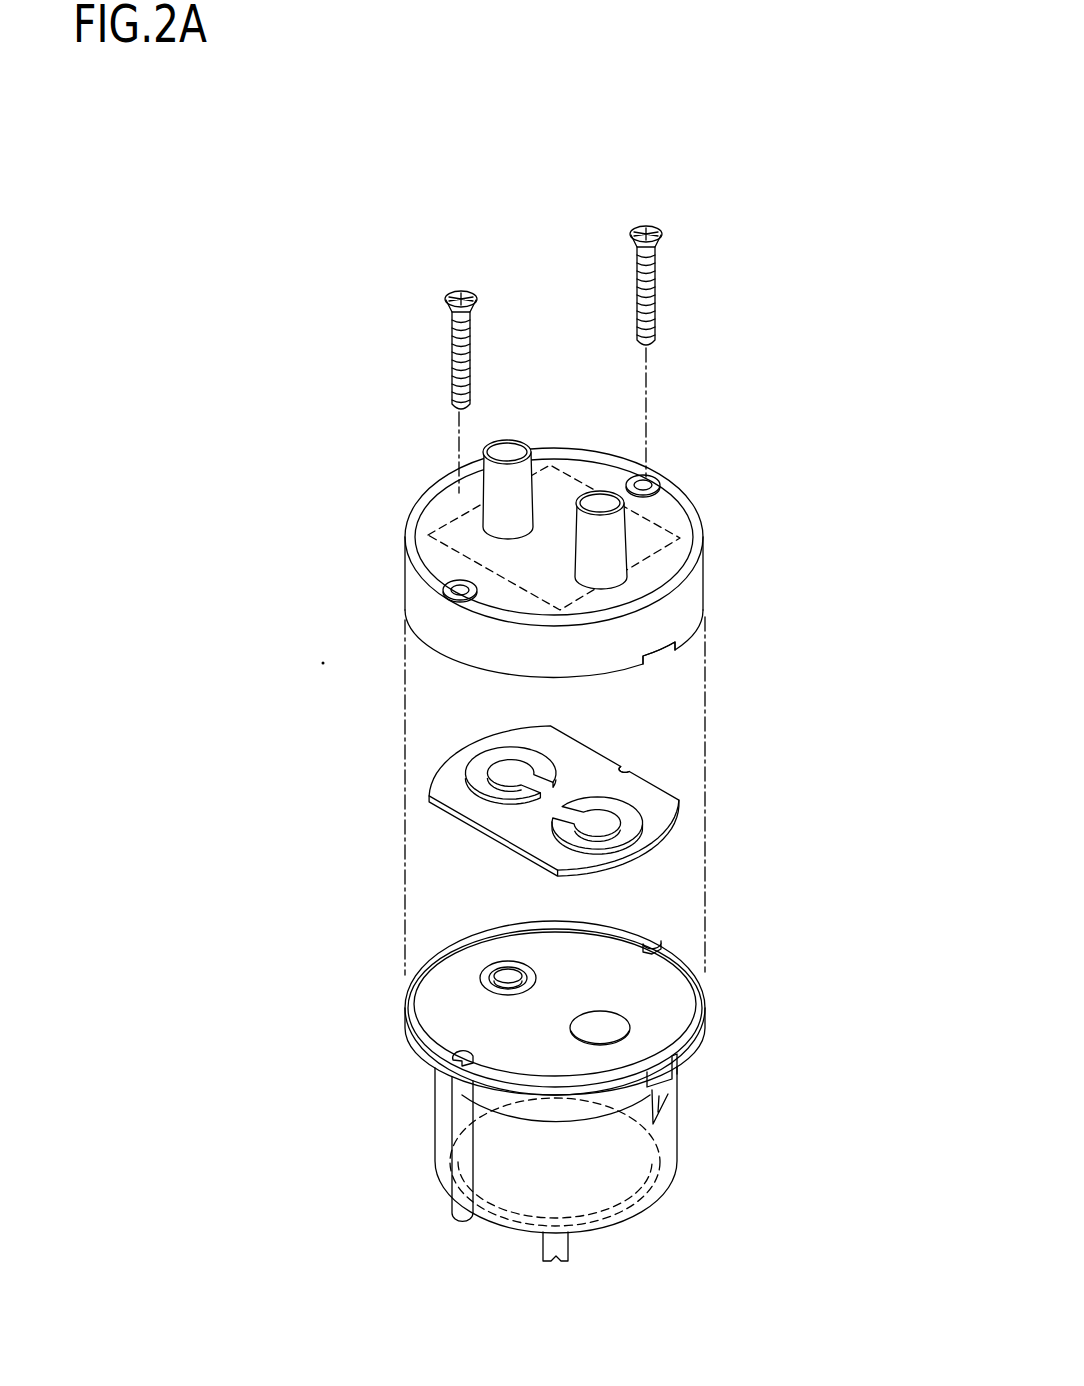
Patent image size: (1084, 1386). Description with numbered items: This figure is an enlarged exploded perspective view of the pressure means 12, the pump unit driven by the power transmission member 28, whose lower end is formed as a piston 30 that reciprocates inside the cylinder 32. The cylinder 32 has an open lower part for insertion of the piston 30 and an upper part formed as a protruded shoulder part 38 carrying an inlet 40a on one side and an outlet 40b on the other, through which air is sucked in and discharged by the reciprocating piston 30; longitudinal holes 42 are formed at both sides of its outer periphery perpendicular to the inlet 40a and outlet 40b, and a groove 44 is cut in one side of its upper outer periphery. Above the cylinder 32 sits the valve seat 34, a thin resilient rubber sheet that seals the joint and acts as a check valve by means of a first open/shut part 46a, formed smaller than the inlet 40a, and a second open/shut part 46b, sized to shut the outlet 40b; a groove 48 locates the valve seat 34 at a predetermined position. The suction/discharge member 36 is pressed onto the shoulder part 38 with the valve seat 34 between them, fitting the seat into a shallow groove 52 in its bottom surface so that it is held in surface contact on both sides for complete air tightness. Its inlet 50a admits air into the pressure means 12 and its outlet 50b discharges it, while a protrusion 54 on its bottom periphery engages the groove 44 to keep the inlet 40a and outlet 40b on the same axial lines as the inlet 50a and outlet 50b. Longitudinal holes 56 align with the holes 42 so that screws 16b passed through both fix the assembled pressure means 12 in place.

The pressure means 12 is at (398, 488).
The screw 16b is at (455, 290).
The power transmission member 28 is at (548, 1252).
The piston 30 is at (640, 1205).
The cylinder 32 is at (702, 1046).
The valve seat 34 is at (447, 803).
The suction/discharge member 36 is at (705, 530).
The shoulder part 38 is at (452, 1052).
The inlet 40a is at (605, 1016).
The outlet 40b is at (505, 974).
The longitudinal holes 42 is at (452, 1060).
The groove 44 is at (674, 1072).
The first open/shut part 46a is at (605, 822).
The second open/shut part 46b is at (507, 768).
The groove 48 is at (626, 767).
The inlet 50a is at (602, 500).
The outlet 50b is at (505, 450).
The groove 52 is at (557, 470).
The protrusion 54 is at (667, 660).
The longitudinal holes 56 is at (656, 482).